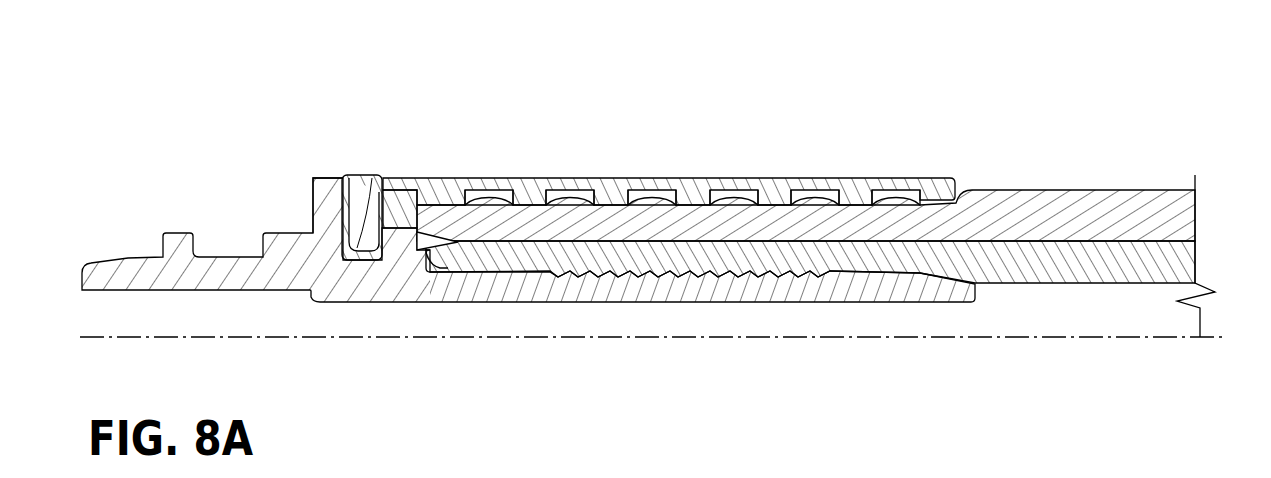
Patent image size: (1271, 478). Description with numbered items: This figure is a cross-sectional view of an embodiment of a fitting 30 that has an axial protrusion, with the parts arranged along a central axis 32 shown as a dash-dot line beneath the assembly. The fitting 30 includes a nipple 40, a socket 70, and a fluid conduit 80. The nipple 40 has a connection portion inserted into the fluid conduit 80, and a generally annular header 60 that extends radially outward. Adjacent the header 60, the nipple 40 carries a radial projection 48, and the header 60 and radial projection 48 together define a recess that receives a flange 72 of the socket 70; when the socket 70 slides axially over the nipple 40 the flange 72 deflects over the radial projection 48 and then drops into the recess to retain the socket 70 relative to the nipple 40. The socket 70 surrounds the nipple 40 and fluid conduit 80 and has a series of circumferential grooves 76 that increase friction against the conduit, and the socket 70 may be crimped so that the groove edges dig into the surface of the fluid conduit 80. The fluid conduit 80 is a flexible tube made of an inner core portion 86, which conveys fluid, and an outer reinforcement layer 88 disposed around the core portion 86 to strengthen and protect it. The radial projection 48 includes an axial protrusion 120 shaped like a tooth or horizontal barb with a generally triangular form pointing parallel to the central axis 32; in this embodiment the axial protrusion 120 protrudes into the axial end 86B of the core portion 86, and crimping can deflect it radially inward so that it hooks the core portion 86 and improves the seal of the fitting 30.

The fitting 30 is at (1032, 90).
The central axis 32 is at (1140, 338).
The nipple 40 is at (223, 184).
The radial projection 48 is at (403, 192).
The header 60 is at (323, 178).
The socket 70 is at (674, 145).
The flange 72 is at (357, 178).
The grooves 76 is at (728, 184).
The fluid conduit 80 is at (810, 258).
The core portion 86 is at (1094, 268).
The axial end of core portion 86B is at (448, 268).
The reinforcement layer 88 is at (1047, 218).
The axial protrusion 120 is at (425, 248).